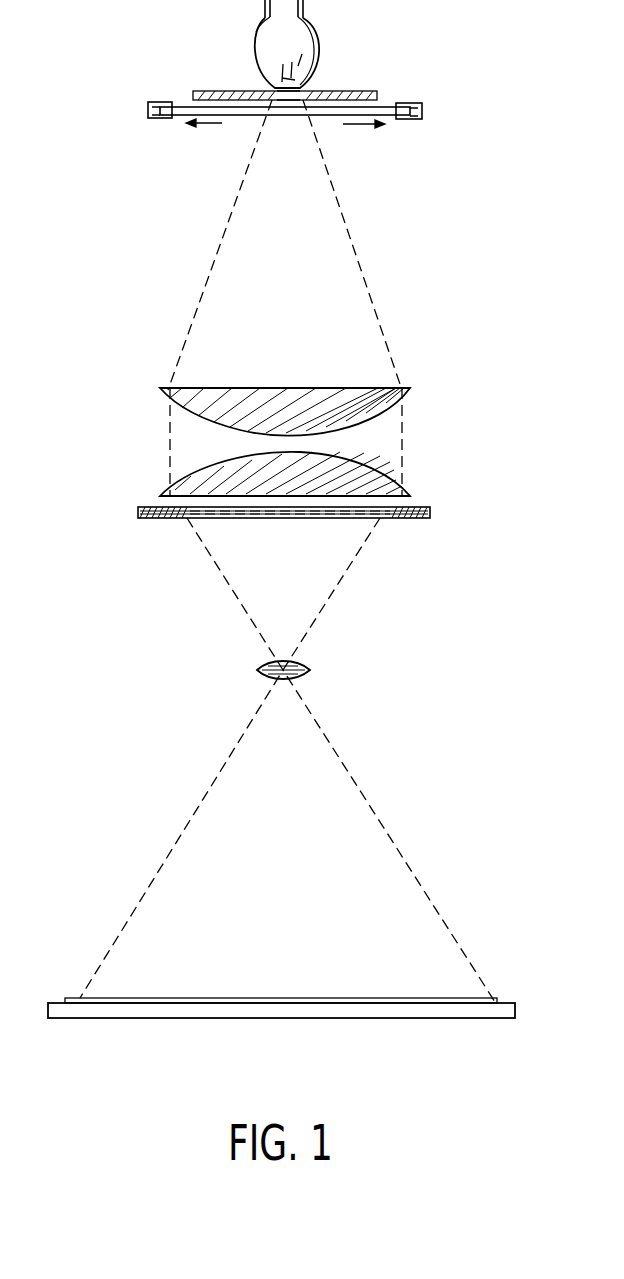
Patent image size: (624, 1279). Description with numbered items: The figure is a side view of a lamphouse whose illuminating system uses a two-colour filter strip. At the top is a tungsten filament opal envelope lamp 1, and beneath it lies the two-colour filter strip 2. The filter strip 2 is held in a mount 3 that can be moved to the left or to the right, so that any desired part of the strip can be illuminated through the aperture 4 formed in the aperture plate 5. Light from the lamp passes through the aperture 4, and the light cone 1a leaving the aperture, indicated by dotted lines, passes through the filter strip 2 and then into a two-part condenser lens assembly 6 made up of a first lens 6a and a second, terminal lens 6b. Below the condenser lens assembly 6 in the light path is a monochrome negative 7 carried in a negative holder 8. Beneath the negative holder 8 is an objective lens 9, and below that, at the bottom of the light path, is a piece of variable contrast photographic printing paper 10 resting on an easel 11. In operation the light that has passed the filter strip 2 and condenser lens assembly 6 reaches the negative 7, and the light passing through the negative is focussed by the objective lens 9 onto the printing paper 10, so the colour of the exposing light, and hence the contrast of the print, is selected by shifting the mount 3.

The tungsten filament opal envelope lamp 1 is at (263, 40).
The light cone 1a is at (218, 257).
The two-colour filter strip 2 is at (328, 116).
The mount 3 is at (422, 107).
The aperture 4 is at (298, 97).
The aperture plate 5 is at (377, 96).
The condenser lens assembly 6 is at (276, 442).
The first lens 6a is at (170, 393).
The second, terminal lens 6b is at (187, 481).
The monochrome negative 7 is at (353, 518).
The negative holder 8 is at (423, 518).
The objective lens 9 is at (310, 672).
The variable contrast photographic printing paper 10 is at (82, 1000).
The easel 11 is at (513, 1008).